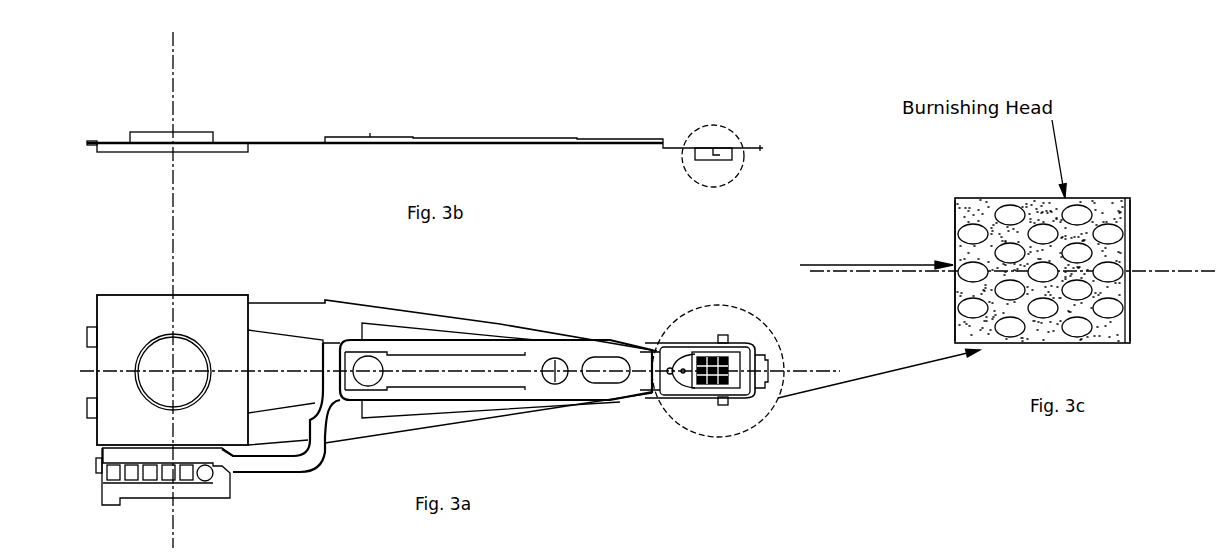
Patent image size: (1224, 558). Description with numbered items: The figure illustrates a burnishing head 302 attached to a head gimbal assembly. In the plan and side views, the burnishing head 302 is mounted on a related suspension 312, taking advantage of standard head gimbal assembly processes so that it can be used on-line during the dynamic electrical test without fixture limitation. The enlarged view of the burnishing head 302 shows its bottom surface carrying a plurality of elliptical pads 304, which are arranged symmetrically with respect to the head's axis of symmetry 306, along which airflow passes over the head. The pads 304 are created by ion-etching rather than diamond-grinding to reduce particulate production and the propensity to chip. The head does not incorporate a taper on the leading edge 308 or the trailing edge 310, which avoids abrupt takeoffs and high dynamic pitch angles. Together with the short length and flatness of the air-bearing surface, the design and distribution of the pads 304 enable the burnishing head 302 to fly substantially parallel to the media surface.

In FIG. 3A, the burnishing head 302 is at (722, 437).
In FIG. 3B, the burnishing head 302 is at (727, 127).
In FIG. 3C, the burnishing head 302 is at (1095, 195).
In FIG. 3C, the elliptical pads 304 is at (1153, 359).
In FIG. 3C, the axis 306 is at (887, 272).
In FIG. 3C, the leading edge 308 is at (953, 305).
In FIG. 3C, the trailing edge 310 is at (1130, 273).
In FIG. 3B, the suspension 312 is at (368, 137).